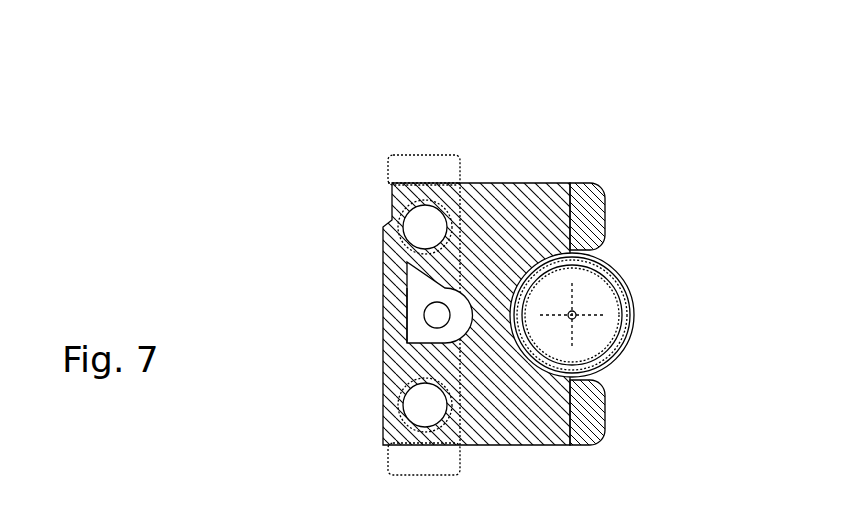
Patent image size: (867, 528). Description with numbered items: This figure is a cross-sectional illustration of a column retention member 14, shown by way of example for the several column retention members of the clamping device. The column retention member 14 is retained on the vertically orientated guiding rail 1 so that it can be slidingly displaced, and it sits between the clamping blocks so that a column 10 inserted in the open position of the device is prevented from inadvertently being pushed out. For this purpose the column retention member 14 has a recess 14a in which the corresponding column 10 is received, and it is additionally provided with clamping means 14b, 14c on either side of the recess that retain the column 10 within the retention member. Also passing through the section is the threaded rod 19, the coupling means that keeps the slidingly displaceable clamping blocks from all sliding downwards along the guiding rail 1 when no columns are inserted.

The guiding rail 1 is at (393, 352).
The threaded rod 19 is at (437, 315).
The column retention member 14 is at (662, 119).
The recess 14a is at (540, 255).
The clamping means 14b is at (590, 415).
The clamping means 14c is at (585, 212).
The column 10 is at (620, 278).